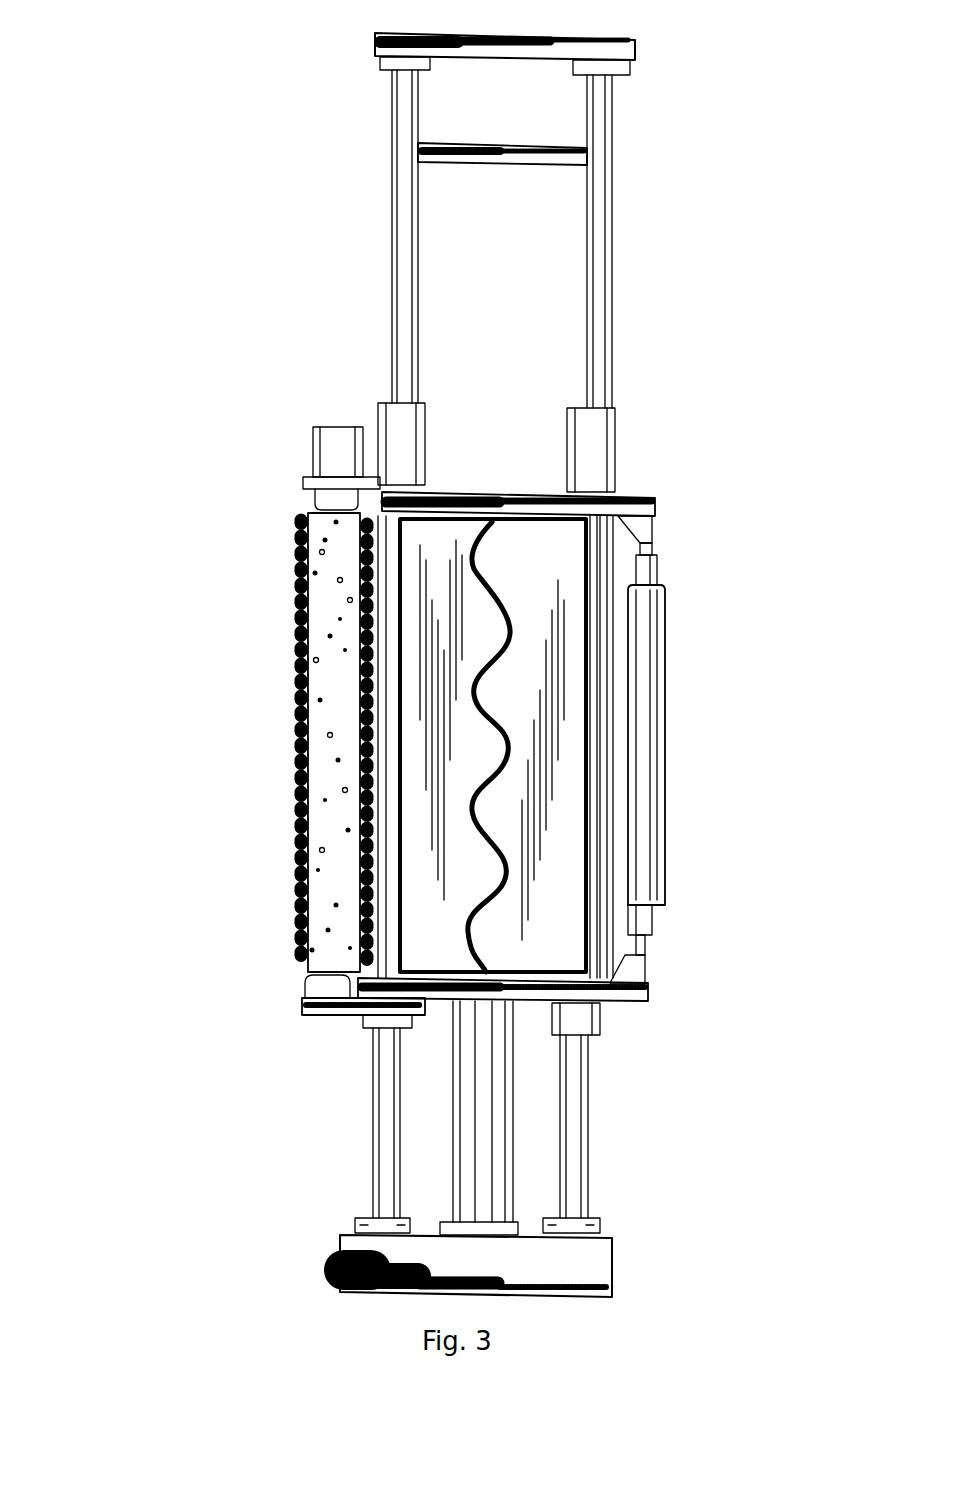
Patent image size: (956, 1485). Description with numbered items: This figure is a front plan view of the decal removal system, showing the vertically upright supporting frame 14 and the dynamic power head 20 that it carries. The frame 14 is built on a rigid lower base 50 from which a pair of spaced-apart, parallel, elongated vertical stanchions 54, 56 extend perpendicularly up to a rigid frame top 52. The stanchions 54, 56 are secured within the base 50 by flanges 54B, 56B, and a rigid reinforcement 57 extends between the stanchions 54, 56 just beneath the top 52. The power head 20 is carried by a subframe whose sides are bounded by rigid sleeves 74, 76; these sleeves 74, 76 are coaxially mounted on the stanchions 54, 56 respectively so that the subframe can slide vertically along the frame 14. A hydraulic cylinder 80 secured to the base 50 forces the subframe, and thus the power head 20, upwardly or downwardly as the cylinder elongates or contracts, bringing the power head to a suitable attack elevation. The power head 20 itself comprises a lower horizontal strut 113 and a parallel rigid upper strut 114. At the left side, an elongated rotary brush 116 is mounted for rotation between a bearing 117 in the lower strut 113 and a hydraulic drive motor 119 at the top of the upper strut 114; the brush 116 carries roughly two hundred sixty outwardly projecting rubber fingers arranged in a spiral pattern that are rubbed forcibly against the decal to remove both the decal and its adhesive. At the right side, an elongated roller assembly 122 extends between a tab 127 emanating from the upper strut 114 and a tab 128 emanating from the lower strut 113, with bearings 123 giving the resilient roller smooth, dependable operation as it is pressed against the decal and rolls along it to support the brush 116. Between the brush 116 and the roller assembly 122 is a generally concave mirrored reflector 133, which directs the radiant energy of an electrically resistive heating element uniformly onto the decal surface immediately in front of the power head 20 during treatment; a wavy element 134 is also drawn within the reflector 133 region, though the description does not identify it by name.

The supporting frame 14 is at (612, 265).
The dynamic power head 20 is at (258, 667).
The lower base 50 is at (605, 1265).
The frame top 52 is at (528, 42).
The vertical stanchion 54 is at (420, 268).
The flange 54B is at (352, 1225).
The vertical stanchion 56 is at (615, 175).
The flange 56B is at (605, 1220).
The reinforcement 57 is at (455, 147).
The sleeve 74 is at (428, 428).
The sleeve 76 is at (600, 1030).
The hydraulic cylinder 80 is at (505, 1140).
The lower strut 113 is at (645, 1000).
The upper strut 114 is at (650, 500).
The rotary brush 116 is at (310, 805).
The bearing 117 is at (305, 1000).
The hydraulic drive motor 119 is at (312, 446).
The roller assembly 122 is at (667, 731).
The bearings 123 is at (660, 575).
The tab 127 is at (652, 530).
The tab 128 is at (650, 972).
The mirrored reflector 133 is at (440, 540).
The wavy test line 134 is at (478, 947).